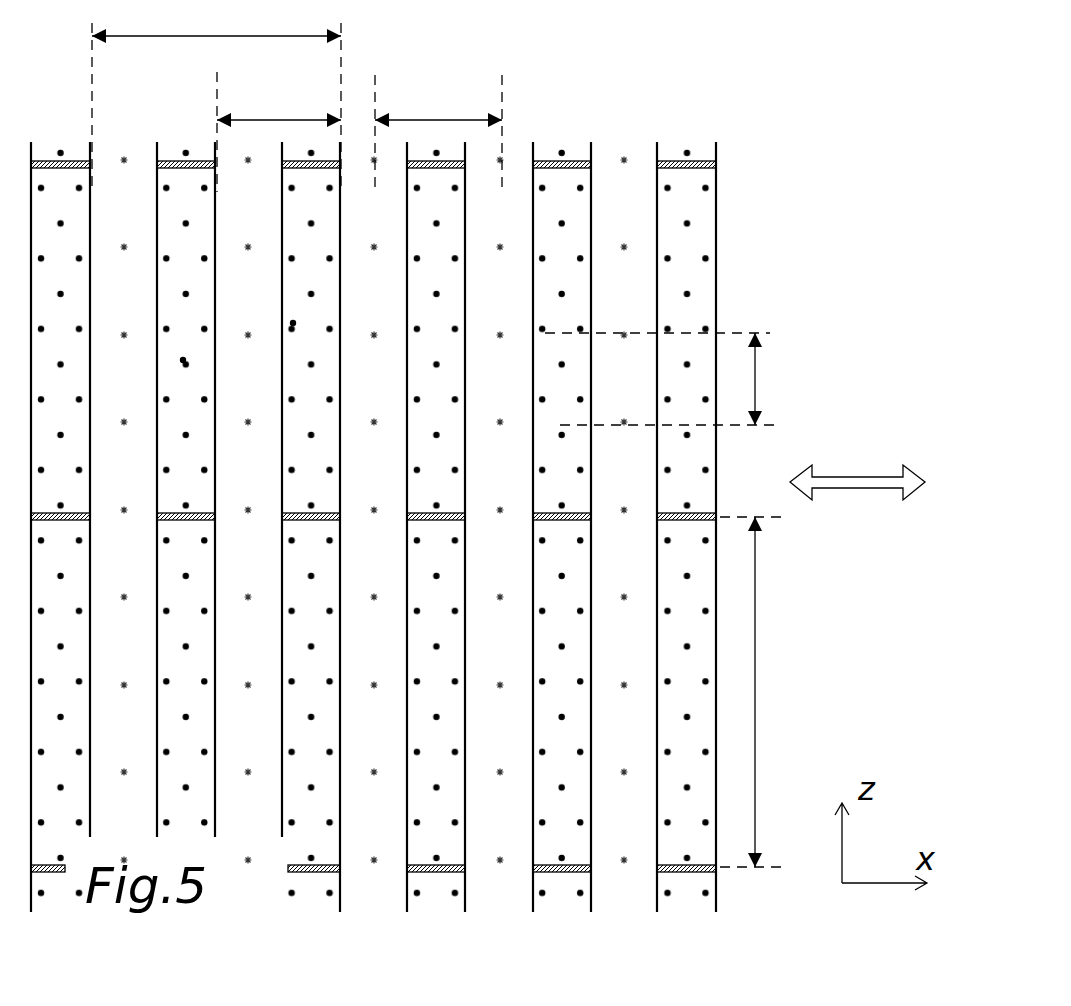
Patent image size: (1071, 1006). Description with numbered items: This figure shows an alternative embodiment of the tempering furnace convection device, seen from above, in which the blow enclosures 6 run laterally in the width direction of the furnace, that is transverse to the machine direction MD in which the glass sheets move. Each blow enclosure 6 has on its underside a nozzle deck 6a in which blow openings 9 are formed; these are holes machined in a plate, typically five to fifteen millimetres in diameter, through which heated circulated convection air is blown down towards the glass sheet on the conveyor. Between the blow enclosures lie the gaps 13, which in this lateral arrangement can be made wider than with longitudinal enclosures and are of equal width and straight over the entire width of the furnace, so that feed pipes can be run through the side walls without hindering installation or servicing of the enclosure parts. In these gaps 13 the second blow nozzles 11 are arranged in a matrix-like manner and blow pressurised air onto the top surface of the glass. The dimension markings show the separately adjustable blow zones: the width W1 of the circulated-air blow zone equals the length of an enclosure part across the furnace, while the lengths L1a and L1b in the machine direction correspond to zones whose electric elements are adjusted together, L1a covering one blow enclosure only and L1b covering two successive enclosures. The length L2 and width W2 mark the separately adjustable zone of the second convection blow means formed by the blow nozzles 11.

The blow enclosure 6 is at (716, 182).
The nozzle deck 6a is at (700, 240).
The gap between blow enclosures 13 is at (640, 299).
The blow opening 9 is at (293, 323).
The blow nozzle 11 is at (375, 687).
The length of separately adjustable blow zone including two blow enclosures L1b is at (200, 38).
The length of separately adjustable blow zone including one blow enclosure L1a is at (270, 118).
The separately adjustable length of second convection blow means L2 is at (430, 118).
The width of separately adjustable blow zone of circulated air convection W1 is at (757, 688).
The separately adjustable width of second convection blow means W2 is at (757, 385).
The machine direction MD is at (865, 501).